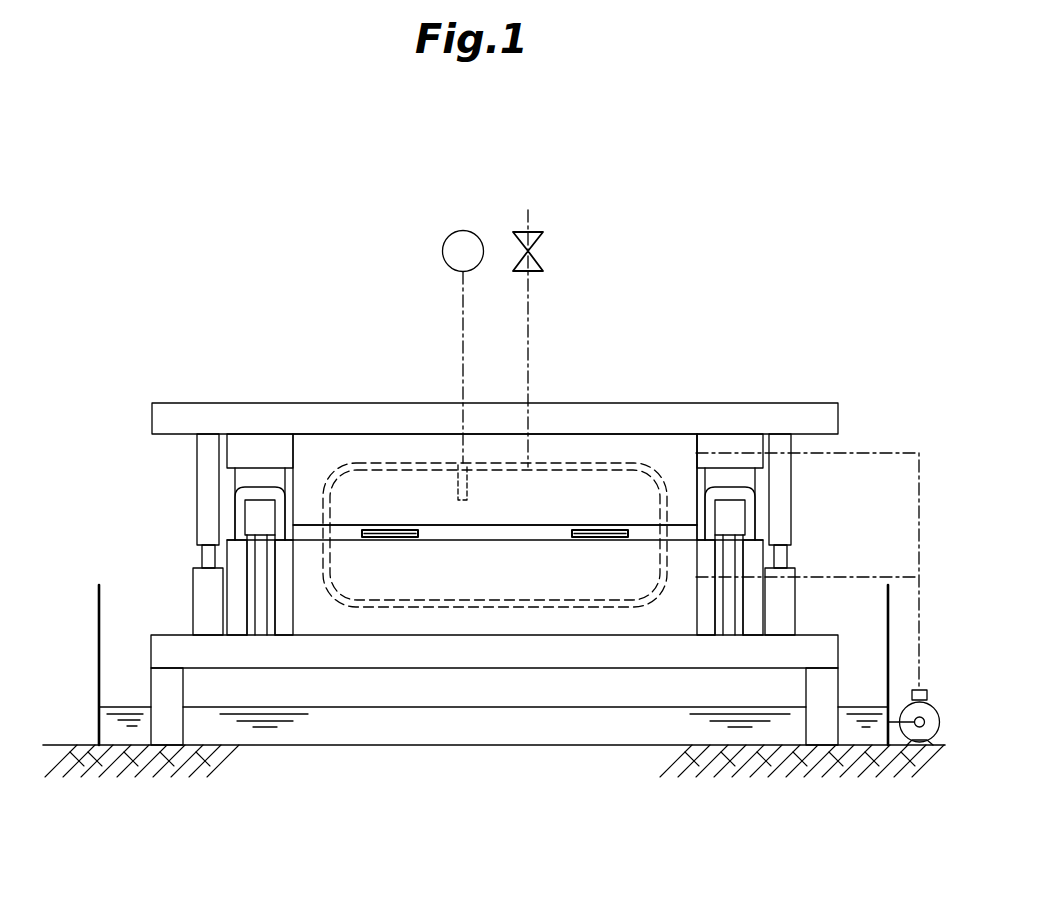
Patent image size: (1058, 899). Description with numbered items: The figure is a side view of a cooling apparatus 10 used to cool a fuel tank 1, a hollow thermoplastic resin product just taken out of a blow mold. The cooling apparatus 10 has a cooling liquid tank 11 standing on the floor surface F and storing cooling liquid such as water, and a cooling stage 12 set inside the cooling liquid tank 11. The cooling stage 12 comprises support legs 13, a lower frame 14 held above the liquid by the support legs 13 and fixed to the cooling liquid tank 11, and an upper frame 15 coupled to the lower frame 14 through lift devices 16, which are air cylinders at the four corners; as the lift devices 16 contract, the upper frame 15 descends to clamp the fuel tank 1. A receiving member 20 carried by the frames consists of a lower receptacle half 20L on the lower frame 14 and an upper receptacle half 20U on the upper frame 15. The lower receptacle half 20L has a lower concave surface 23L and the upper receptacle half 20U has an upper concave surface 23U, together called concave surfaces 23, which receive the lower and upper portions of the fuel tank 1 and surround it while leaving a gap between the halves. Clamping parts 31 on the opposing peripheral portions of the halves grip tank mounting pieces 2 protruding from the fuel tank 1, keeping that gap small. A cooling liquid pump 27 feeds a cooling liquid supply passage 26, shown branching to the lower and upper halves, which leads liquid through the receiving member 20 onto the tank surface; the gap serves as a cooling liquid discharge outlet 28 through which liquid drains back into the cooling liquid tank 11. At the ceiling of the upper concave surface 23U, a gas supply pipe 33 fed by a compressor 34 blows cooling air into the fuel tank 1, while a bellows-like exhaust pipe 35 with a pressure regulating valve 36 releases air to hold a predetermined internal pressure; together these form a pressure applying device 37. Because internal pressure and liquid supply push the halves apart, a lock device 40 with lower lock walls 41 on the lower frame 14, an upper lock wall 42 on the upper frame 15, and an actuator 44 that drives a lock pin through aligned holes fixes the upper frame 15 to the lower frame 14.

The fuel tank 1 is at (505, 465).
The tank mounting pieces 2 is at (410, 527).
The cooling apparatus 10 is at (756, 258).
The cooling liquid tank 11 is at (99, 613).
The cooling stage 12 is at (116, 466).
The support legs 13 is at (157, 692).
The lower frame 14 is at (168, 642).
The upper frame 15 is at (172, 412).
The lift devices 16 is at (204, 555).
The receiving member 20 is at (666, 412).
The upper receptacle half 20U is at (652, 460).
The lower receptacle half 20L is at (680, 545).
The concave surfaces 23 is at (484, 415).
The upper concave surface 23U is at (370, 462).
The lower concave surface 23L is at (323, 560).
The cooling liquid supply passage 26 is at (922, 593).
The cooling liquid pump 27 is at (931, 707).
The cooling liquid discharge outlet 28 is at (491, 538).
The clamping parts 31 is at (385, 530).
The gas supply pipe 33 is at (466, 483).
The compressor 34 is at (467, 231).
The exhaust pipe 35 is at (546, 338).
The pressure regulating valve 36 is at (538, 262).
The pressure applying device 37 is at (447, 229).
The lock device 40 is at (259, 430).
The lower lock walls 41 is at (753, 527).
The upper lock wall 42 is at (737, 476).
The actuator 44 is at (258, 510).
The floor surface F is at (62, 746).